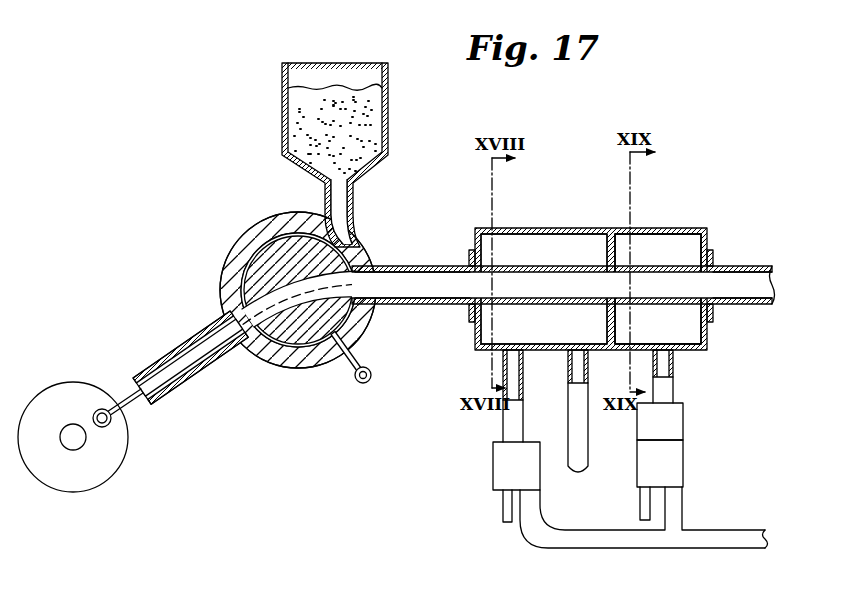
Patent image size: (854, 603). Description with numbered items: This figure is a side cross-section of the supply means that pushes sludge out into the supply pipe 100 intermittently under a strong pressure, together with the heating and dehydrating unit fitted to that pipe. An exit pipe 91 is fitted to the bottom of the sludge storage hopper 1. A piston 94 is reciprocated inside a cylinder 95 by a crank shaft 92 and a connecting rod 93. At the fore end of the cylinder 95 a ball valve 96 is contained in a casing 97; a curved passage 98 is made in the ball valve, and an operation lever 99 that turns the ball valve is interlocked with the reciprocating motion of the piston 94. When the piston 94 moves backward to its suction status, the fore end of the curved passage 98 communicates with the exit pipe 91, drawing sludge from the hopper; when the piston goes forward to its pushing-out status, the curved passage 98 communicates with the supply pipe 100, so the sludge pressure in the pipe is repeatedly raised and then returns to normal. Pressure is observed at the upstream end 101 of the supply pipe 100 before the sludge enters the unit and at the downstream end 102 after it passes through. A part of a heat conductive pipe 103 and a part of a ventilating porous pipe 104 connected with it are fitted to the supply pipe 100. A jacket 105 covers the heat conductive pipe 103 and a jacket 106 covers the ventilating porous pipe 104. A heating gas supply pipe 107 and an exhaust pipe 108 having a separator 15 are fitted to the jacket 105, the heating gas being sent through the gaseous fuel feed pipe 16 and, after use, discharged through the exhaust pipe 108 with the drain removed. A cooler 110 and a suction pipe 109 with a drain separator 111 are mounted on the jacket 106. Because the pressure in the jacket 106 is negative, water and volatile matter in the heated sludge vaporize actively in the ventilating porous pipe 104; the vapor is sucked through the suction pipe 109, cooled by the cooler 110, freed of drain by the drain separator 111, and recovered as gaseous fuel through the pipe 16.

The sludge storage hopper 1 is at (390, 102).
The exit pipe 91 is at (343, 196).
The crank shaft 92 is at (80, 392).
The connecting rod 93 is at (120, 403).
The piston 94 is at (222, 309).
The cylinder 95 is at (178, 347).
The ball valve 96 is at (247, 252).
The casing 97 is at (264, 227).
The curved passage 98 is at (362, 250).
The operation lever 99 is at (355, 383).
The supply pipe 100 is at (407, 306).
The upstream end 101 is at (430, 277).
The downstream end 102 is at (740, 283).
The heat conductive pipe 103 is at (498, 268).
The ventilating porous pipe 104 is at (657, 248).
The jacket 105 is at (567, 229).
The jacket 106 is at (696, 229).
The heating gas supply pipe 107 is at (594, 450).
The exhaust pipe 108 is at (505, 428).
The separator 15 is at (500, 472).
The suction pipe 109 is at (673, 393).
The cooler 110 is at (676, 418).
The drain separator 111 is at (676, 463).
The gaseous fuel feed pipe 16 is at (735, 548).